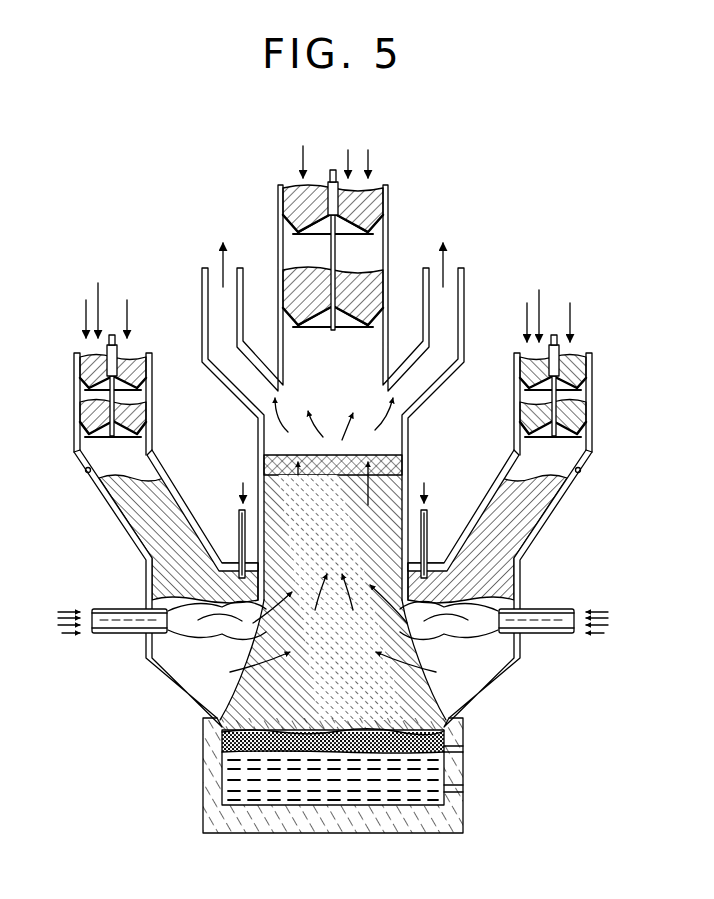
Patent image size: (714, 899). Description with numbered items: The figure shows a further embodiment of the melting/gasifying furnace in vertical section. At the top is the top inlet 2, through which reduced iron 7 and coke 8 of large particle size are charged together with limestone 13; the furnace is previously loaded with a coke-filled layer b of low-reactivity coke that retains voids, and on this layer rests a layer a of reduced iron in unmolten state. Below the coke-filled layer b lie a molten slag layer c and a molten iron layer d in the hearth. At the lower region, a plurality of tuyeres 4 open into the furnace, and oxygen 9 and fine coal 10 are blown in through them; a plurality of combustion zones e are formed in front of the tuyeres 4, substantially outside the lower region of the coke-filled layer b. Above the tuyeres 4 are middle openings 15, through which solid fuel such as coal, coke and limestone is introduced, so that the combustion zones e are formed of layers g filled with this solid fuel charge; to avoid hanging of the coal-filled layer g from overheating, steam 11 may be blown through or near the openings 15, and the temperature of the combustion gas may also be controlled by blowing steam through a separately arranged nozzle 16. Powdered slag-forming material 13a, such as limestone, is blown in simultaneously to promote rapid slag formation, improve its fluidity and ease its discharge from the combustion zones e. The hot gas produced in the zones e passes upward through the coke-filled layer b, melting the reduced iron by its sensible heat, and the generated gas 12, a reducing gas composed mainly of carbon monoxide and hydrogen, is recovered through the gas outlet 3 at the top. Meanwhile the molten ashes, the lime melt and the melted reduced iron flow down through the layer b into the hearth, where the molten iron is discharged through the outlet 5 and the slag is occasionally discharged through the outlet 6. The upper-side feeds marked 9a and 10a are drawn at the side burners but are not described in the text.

The top inlet 2 is at (278, 232).
The gas outlet 3 is at (202, 292).
The tuyeres 4 is at (118, 636).
The outlet 5 is at (463, 788).
The outlet 6 is at (463, 747).
The reduced iron 7 is at (303, 150).
The coke 8 is at (348, 150).
The oxygen 9 is at (56, 628).
The oxygen supply to side burner 9a is at (127, 300).
The fine coal 10 is at (56, 616).
The fuel supply to upper side burner 10a is at (86, 311).
The steam 11 is at (243, 483).
The generated gas 12 is at (214, 262).
The limestone 13 is at (370, 150).
The slag-forming material 13a is at (64, 636).
The openings 15 is at (86, 472).
The nozzle 16 is at (239, 520).
The layer a is at (344, 458).
The coke-filled layer b is at (344, 684).
The molten slag layer c is at (222, 746).
The molten iron layer d is at (346, 795).
The combustion zones e is at (190, 632).
The coal-filled layer g is at (204, 584).